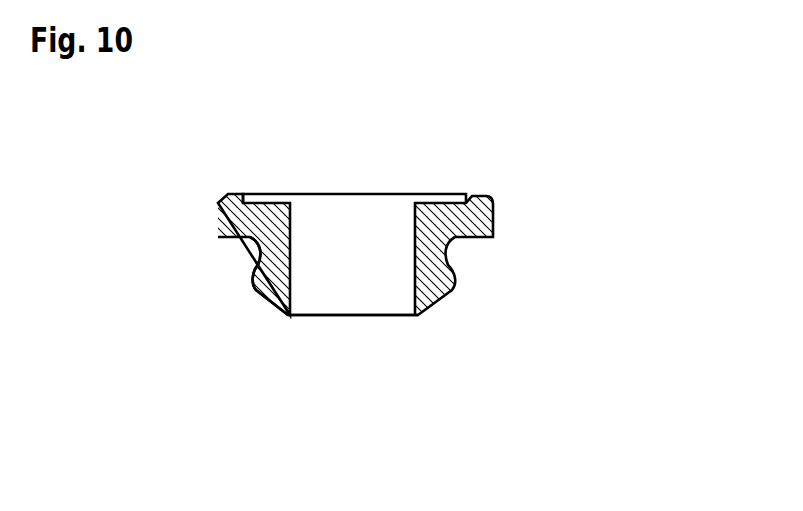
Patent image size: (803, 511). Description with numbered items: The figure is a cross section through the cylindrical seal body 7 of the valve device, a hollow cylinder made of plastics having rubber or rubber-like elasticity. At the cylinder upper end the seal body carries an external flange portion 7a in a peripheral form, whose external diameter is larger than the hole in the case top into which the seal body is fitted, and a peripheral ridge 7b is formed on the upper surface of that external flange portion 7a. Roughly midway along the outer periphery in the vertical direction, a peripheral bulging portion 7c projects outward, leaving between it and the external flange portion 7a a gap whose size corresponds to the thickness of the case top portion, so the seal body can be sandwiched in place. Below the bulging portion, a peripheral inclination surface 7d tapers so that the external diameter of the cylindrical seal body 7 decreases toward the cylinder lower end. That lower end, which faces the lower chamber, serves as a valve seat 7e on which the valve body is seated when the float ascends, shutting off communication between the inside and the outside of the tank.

The cylindrical seal body 7 is at (420, 229).
The external flange portion 7a is at (494, 224).
The peripheral ridge 7b is at (241, 193).
The peripheral bulging portion 7c is at (253, 283).
The peripheral inclination surface 7d is at (273, 303).
The valve seat 7e is at (419, 317).